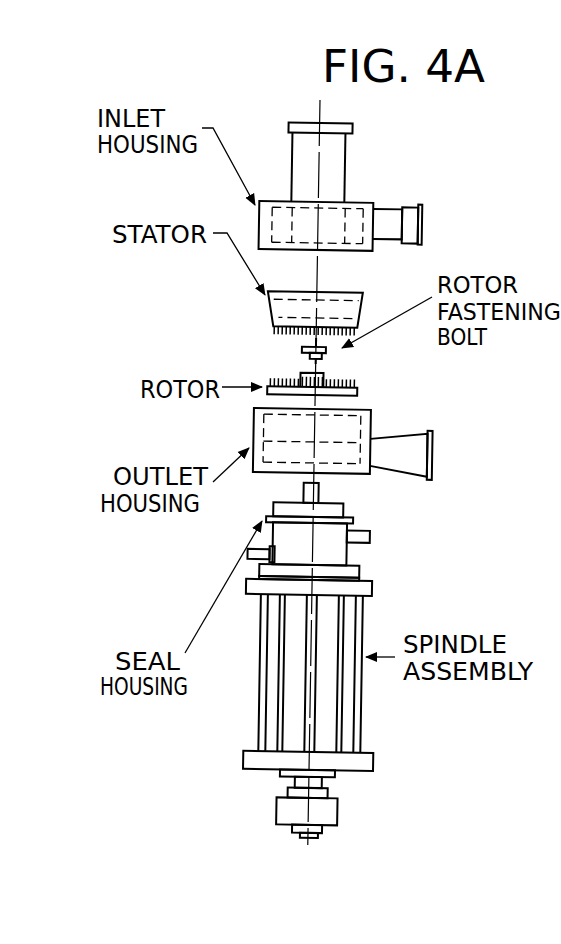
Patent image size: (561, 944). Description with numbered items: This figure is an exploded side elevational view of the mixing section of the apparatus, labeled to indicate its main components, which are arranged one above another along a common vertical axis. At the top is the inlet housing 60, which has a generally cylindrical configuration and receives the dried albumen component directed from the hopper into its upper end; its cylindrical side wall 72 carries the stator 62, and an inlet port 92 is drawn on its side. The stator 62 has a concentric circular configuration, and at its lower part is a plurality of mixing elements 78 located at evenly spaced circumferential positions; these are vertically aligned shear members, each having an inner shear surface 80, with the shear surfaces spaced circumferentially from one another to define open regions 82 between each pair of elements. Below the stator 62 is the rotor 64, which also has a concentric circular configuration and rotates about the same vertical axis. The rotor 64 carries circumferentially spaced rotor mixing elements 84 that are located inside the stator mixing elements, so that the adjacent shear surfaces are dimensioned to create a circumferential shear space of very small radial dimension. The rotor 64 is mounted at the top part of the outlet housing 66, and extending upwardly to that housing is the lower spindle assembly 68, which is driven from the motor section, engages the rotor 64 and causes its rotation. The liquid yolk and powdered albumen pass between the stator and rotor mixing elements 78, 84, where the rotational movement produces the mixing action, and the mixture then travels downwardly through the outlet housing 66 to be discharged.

The inlet housing 60 is at (374, 202).
The cylindrical side wall 72 is at (360, 201).
The inlet port 92 is at (413, 223).
The stator 62 is at (366, 293).
The mixing elements 78 is at (277, 332).
The open regions 82 is at (304, 349).
The inner shear surface 80 is at (332, 350).
The rotor 64 is at (362, 391).
The rotor mixing elements 84 is at (362, 380).
The outlet housing 66 is at (259, 425).
The lower spindle assembly 68 is at (350, 708).